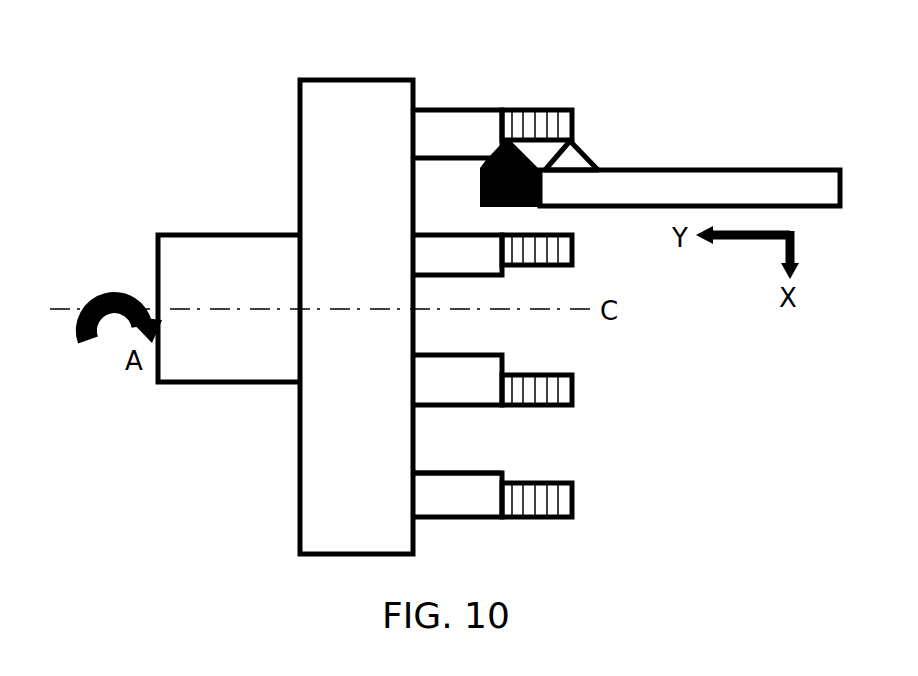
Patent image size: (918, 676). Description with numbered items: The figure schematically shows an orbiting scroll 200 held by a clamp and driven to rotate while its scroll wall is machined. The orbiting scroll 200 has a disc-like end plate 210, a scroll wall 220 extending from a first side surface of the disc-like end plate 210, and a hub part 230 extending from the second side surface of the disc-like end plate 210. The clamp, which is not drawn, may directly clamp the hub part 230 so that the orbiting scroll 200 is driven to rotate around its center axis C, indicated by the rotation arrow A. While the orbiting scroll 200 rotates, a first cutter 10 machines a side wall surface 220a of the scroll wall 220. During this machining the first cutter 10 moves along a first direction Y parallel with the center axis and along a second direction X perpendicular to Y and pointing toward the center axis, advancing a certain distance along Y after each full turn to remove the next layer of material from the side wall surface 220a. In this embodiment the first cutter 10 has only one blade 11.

The first cutter 10 is at (708, 185).
The blade 11 is at (577, 165).
The orbiting scroll 200 is at (222, 463).
The disc-like end plate 210 is at (350, 95).
The scroll wall 220 is at (463, 501).
The side wall surface 220a is at (478, 470).
The hub part 230 is at (240, 256).